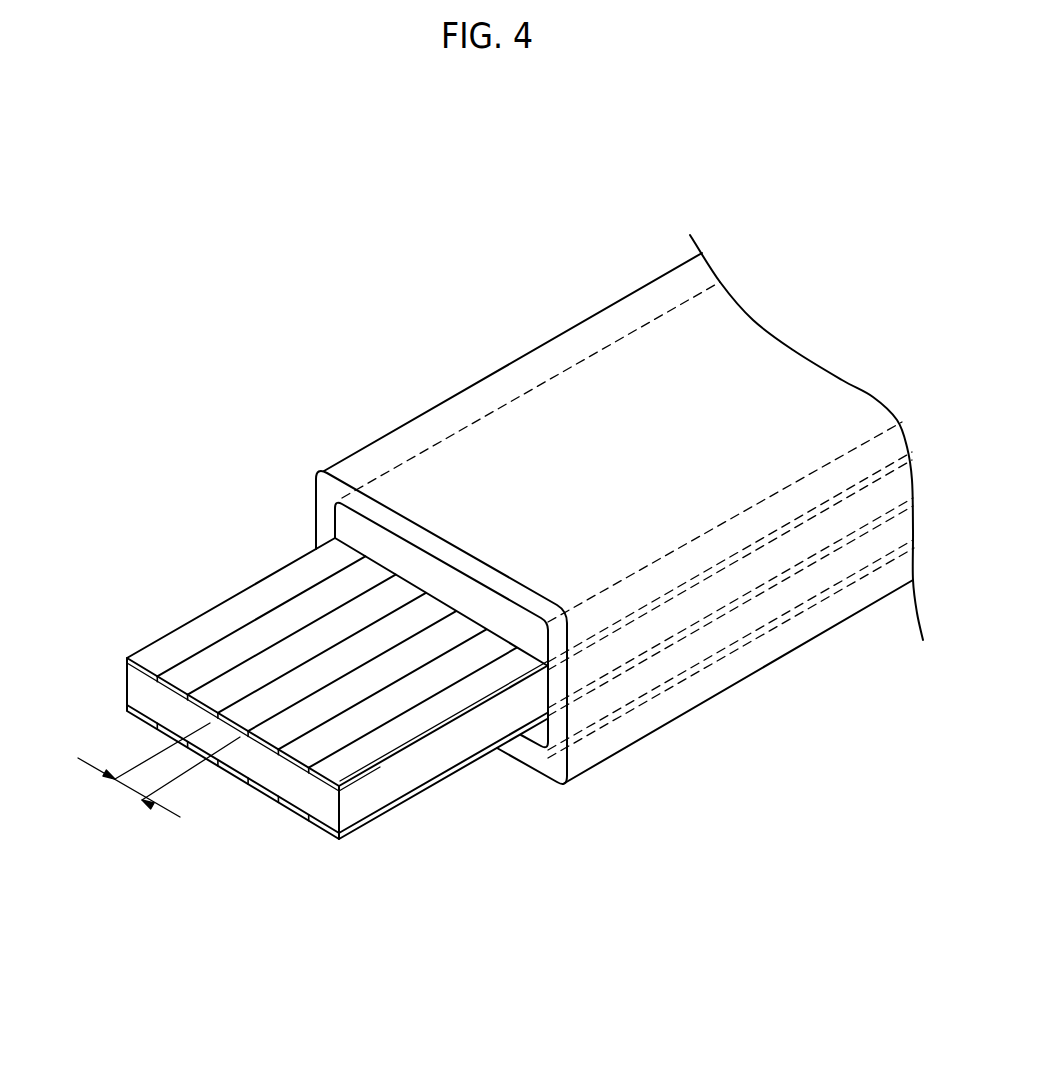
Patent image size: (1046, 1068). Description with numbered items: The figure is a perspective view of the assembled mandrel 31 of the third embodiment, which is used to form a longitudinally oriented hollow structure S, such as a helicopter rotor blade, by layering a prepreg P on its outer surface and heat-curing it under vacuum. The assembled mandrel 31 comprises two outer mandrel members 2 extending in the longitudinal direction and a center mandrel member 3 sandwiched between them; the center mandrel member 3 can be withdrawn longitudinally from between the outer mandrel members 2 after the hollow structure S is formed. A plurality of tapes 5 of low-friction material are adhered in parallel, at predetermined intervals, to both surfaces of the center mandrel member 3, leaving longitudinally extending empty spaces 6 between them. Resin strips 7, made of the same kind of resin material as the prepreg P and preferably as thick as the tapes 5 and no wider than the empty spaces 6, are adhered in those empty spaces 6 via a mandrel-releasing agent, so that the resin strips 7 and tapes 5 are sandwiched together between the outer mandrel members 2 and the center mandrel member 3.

The outer mandrel member 2 is at (587, 531).
The center mandrel member 3 is at (138, 696).
The tape 5 is at (432, 717).
The empty space 6 is at (159, 771).
The resin strip 7 is at (217, 658).
The assembled mandrel 31 is at (83, 583).
The hollow structure S is at (508, 440).
The prepreg P is at (588, 318).